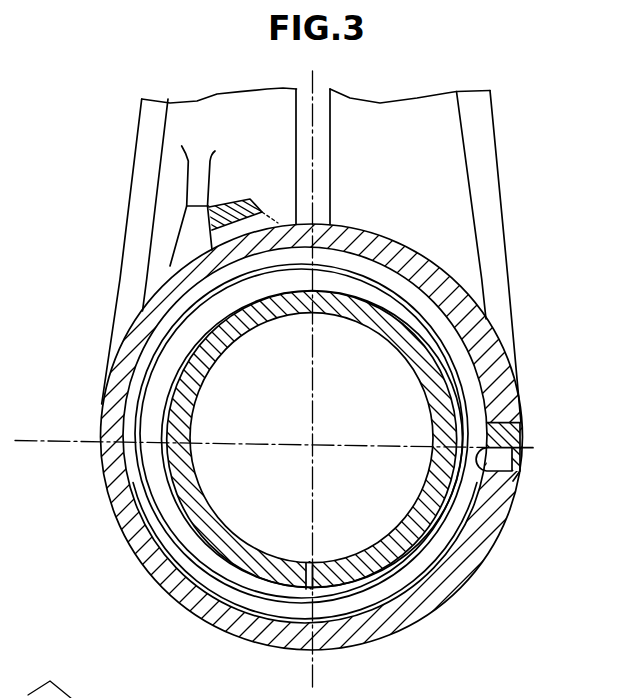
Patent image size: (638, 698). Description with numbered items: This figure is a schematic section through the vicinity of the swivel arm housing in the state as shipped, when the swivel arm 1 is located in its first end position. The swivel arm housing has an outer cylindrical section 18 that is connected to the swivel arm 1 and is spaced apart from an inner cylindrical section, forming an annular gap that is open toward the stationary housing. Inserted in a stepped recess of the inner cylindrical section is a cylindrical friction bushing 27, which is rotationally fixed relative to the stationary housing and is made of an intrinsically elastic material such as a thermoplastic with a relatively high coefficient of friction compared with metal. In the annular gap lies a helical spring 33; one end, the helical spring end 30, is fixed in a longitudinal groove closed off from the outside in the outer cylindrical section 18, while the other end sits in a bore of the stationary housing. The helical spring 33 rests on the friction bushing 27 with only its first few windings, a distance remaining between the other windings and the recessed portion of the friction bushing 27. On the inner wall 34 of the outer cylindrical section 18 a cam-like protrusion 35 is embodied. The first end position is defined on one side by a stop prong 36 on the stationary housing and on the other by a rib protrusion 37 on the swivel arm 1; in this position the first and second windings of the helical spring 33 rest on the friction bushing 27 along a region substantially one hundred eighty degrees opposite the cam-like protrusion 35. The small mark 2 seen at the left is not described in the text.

The swivel arm 1 is at (331, 137).
The housing 2 is at (63, 467).
The outer cylindrical section 18 is at (183, 512).
The friction bushing 27 is at (245, 542).
The helical spring end 30 is at (503, 462).
The helical spring 33 is at (418, 572).
The inner wall 34 is at (277, 437).
The cam-like protrusion 35 is at (227, 582).
The stop prong 36 is at (242, 203).
The rib protrusion 37 is at (193, 233).